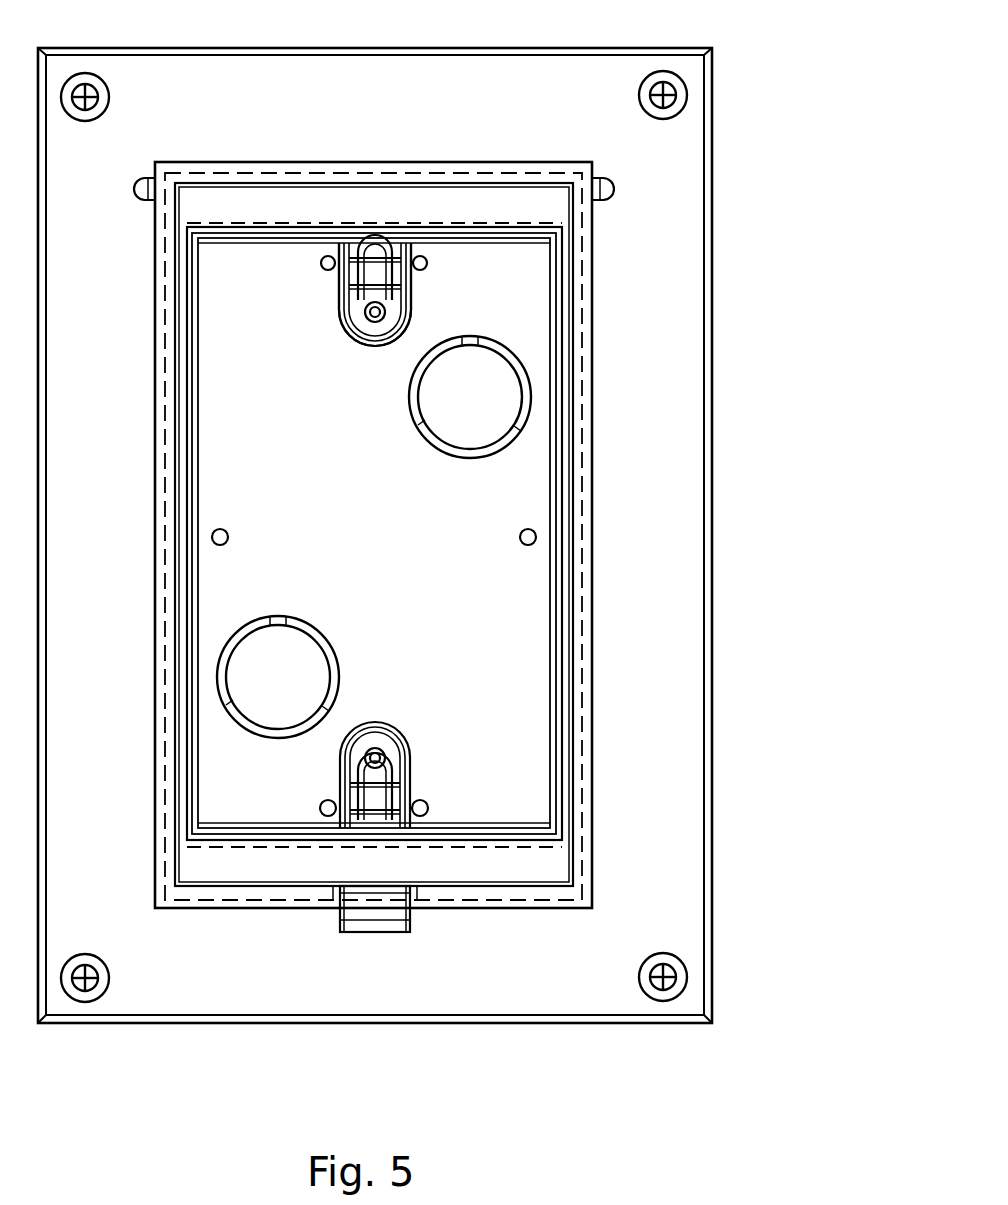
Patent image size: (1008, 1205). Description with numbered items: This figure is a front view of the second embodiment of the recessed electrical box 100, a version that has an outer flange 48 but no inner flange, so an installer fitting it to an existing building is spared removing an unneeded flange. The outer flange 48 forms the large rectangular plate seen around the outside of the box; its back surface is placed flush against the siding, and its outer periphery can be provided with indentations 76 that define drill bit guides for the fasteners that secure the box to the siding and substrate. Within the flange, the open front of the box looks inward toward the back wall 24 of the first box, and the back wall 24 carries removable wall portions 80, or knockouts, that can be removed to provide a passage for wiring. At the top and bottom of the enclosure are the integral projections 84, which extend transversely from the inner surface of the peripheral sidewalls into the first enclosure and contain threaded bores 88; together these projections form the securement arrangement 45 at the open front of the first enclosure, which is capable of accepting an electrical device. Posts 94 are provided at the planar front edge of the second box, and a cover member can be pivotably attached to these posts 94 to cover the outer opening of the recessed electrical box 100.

The recessed electrical box 100 is at (758, 358).
The indentations 76 is at (672, 91).
The posts 94 is at (614, 189).
The outer flange 48 is at (661, 471).
The back wall 24 is at (313, 472).
The integral projections 84 is at (347, 347).
The securement arrangement 45 is at (300, 304).
The threaded bores 88 is at (405, 737).
The removable wall portions 80 is at (452, 412).